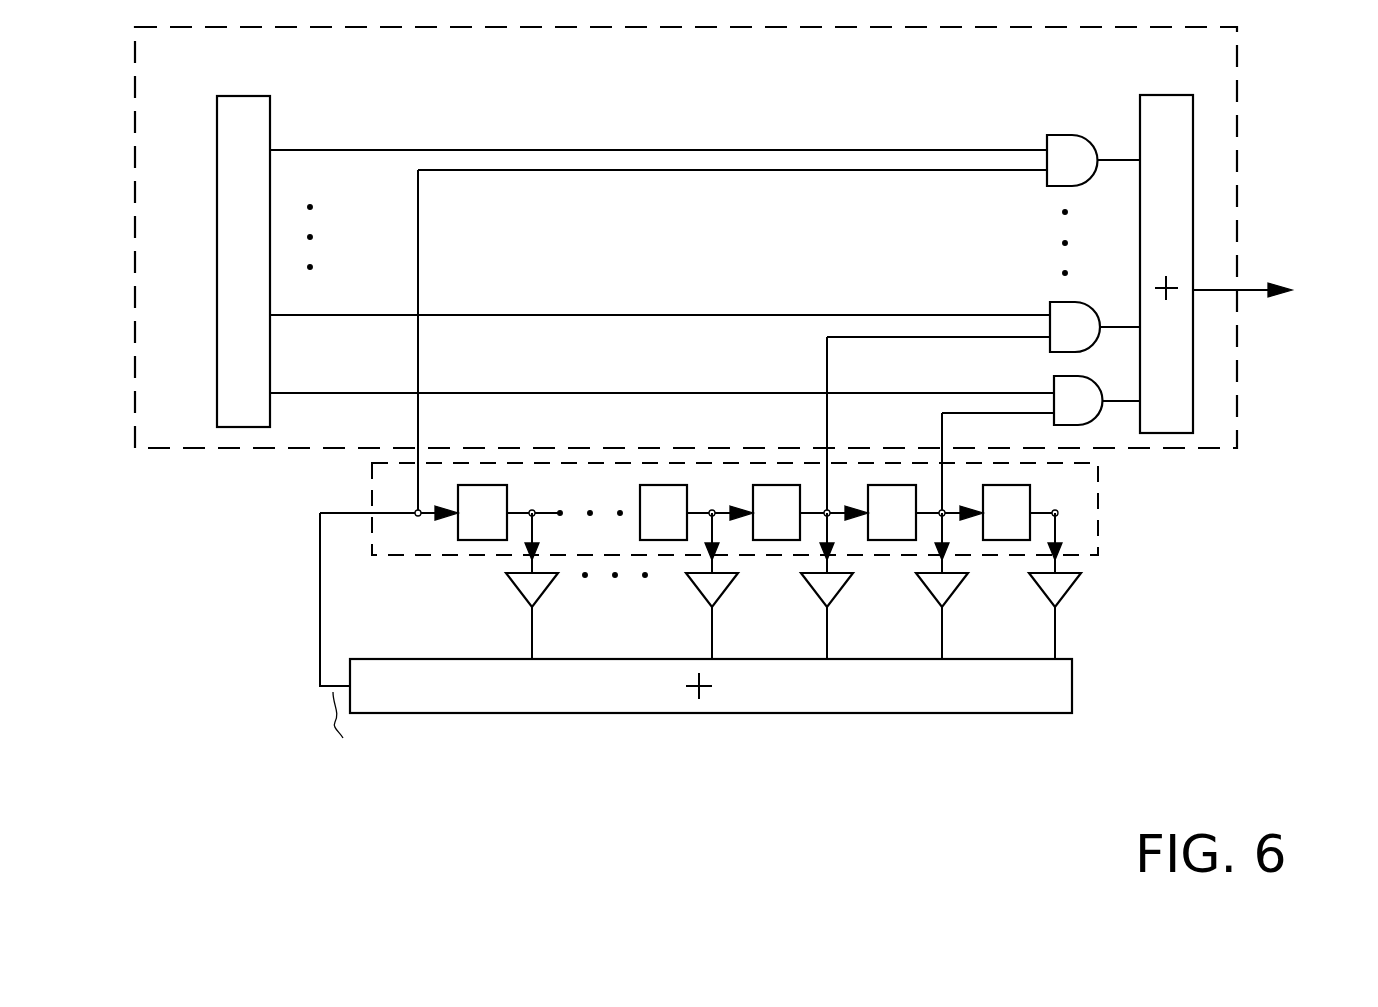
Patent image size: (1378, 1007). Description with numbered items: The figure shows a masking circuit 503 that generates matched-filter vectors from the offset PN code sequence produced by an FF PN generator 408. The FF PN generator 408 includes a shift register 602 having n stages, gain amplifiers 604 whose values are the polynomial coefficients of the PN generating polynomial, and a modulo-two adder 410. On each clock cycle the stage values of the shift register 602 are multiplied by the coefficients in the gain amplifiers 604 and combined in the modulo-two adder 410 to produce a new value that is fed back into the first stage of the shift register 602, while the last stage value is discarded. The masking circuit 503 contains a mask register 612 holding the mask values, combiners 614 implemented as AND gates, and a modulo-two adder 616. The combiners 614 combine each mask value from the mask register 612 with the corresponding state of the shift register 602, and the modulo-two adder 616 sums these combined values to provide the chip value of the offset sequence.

The masking circuit 503 is at (1238, 172).
The mask register 612 is at (270, 96).
The combiners 614 is at (1062, 134).
The modulo-2 adder 616 is at (1193, 120).
The shift register 602 is at (1098, 548).
The FF PN generator 408 is at (300, 462).
The gain amplifiers 604 is at (515, 592).
The adder 410 is at (1003, 714).